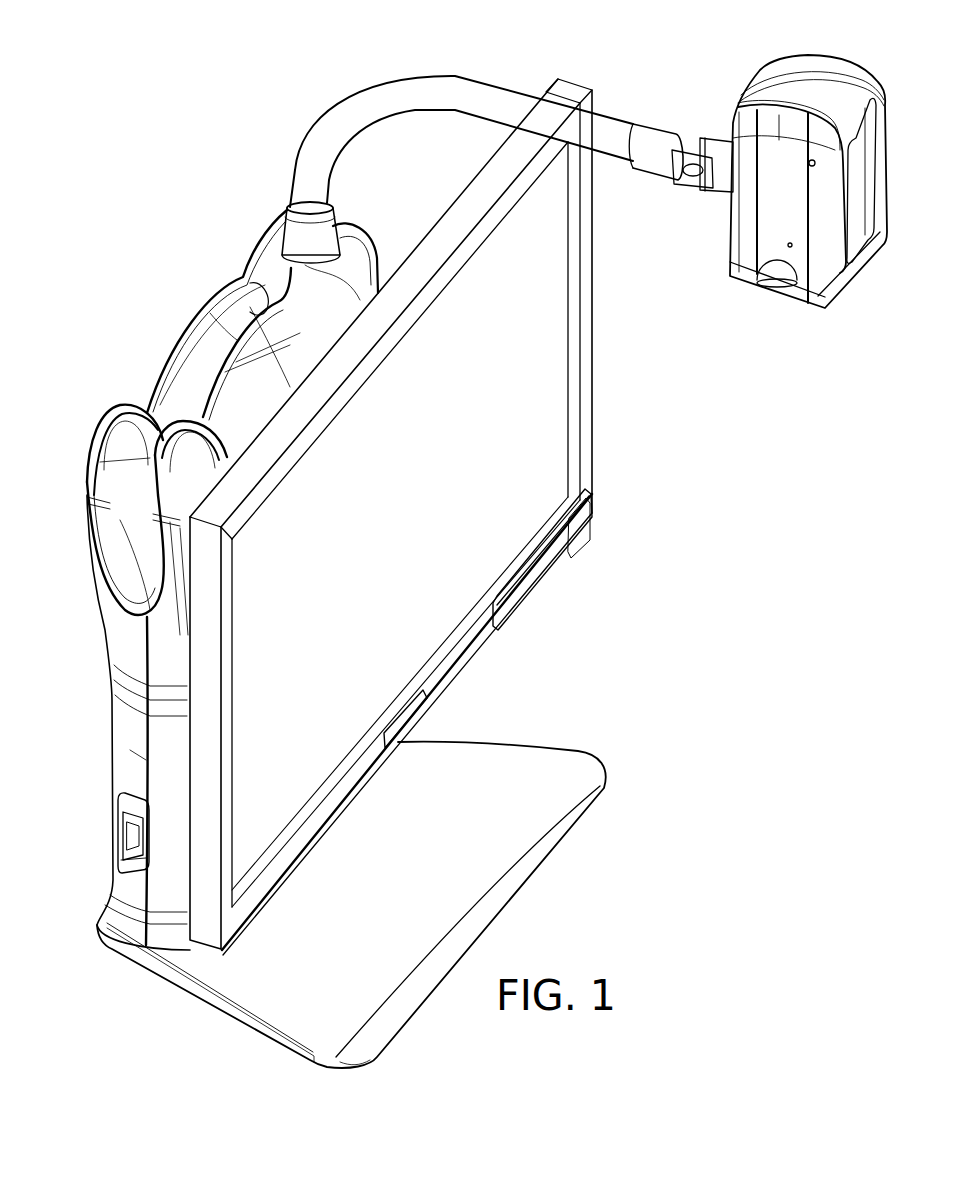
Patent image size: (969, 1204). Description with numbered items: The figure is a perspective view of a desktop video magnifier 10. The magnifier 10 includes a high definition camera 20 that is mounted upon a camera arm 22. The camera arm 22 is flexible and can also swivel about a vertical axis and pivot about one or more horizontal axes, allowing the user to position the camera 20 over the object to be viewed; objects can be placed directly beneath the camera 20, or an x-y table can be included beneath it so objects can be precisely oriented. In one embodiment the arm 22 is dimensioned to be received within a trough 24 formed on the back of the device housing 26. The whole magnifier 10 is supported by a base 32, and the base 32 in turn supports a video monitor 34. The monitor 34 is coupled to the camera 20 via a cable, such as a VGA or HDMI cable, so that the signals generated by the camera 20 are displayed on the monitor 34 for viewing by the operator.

The desktop video magnifier 10 is at (296, 97).
The high definition camera 20 is at (862, 273).
The camera arm 22 is at (310, 182).
The trough 24 is at (203, 363).
The device housing 26 is at (148, 765).
The base 32 is at (549, 767).
The video monitor 34 is at (547, 427).